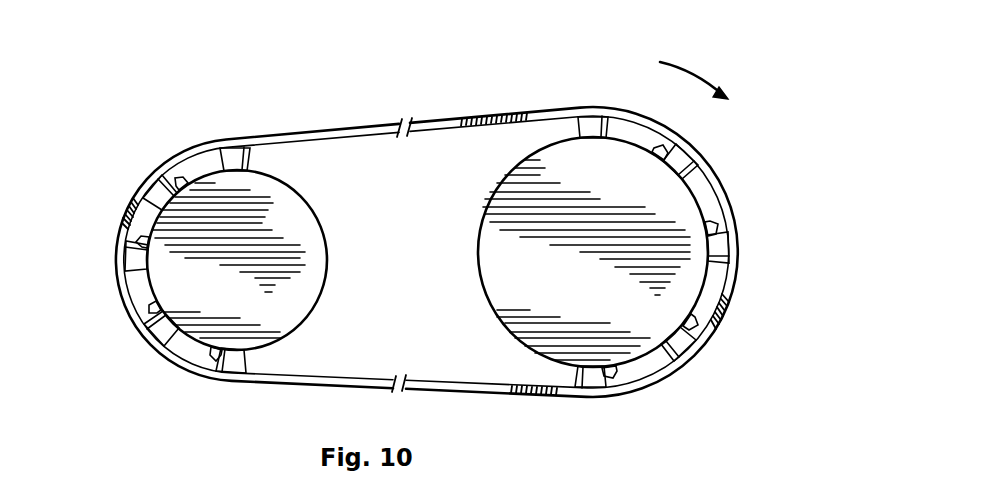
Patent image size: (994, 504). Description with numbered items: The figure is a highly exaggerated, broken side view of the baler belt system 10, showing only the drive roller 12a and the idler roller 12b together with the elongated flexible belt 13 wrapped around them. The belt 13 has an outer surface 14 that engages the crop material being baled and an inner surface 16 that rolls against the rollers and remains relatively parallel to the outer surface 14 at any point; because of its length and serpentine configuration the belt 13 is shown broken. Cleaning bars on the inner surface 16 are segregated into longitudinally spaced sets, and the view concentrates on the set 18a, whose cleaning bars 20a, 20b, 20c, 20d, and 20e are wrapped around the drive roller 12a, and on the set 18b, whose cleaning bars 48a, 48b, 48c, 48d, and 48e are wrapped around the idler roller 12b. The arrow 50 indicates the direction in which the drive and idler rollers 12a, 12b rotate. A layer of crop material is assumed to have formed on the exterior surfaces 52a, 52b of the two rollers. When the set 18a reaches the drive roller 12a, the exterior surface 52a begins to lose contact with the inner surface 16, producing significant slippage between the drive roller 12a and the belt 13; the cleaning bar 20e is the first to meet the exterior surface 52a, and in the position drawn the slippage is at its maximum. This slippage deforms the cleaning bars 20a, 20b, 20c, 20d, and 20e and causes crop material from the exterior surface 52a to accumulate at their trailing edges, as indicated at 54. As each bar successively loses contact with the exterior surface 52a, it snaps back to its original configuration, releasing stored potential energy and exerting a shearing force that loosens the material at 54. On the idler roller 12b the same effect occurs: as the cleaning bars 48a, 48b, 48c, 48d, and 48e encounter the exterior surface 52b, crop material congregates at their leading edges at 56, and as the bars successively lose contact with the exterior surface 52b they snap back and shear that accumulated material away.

The baler belt system 10 is at (372, 112).
The drive roller 12a is at (520, 332).
The idler roller 12b is at (302, 284).
The belt 13 is at (272, 138).
The outer surface 14 is at (488, 118).
The inner surface 16 is at (458, 126).
The set of cleaning bars 18a is at (740, 176).
The set of cleaning bars 18b is at (133, 163).
The cleaning bar 20a is at (723, 251).
The cleaning bar 20b is at (682, 158).
The cleaning bar 20c is at (585, 125).
The cleaning bar 20d is at (683, 346).
The cleaning bar 20e is at (590, 382).
The cleaning bar 48a is at (124, 267).
The cleaning bar 48b is at (160, 340).
The cleaning bar 48c is at (240, 368).
The cleaning bar 48d is at (133, 194).
The cleaning bar 48e is at (233, 150).
The arrow 50 is at (690, 68).
The exterior surface 52a is at (474, 230).
The exterior surface 52b is at (330, 213).
The accumulated crop material 54 is at (662, 150).
The accumulated crop material 56 is at (182, 182).